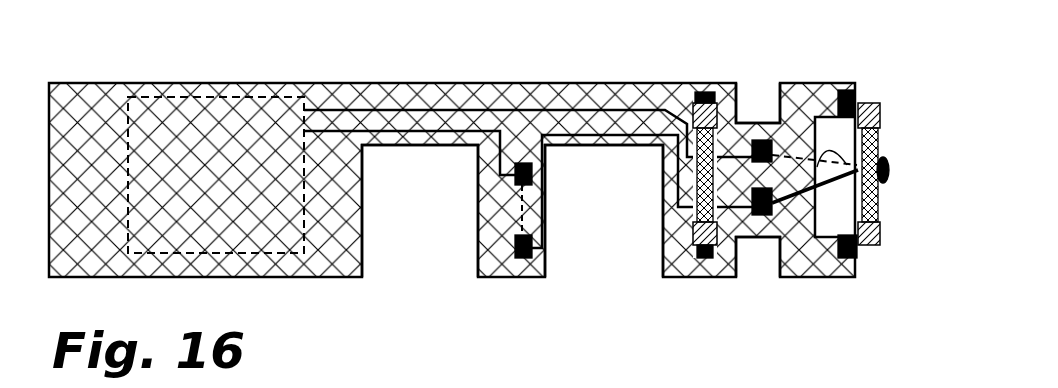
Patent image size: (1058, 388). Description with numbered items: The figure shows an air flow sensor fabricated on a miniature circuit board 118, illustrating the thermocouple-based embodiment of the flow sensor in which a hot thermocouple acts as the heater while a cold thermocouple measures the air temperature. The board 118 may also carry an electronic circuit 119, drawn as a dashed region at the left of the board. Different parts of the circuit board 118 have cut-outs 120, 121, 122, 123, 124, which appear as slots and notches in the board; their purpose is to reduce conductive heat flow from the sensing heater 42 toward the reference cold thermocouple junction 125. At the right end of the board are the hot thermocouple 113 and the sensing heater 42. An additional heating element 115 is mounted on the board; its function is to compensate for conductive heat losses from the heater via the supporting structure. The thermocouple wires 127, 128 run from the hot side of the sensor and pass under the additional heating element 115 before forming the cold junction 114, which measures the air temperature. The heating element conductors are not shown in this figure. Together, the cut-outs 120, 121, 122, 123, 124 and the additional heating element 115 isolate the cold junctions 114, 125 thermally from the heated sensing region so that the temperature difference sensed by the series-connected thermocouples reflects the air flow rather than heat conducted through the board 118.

The miniature circuit board 118 is at (88, 90).
The electronic circuit 119 is at (172, 97).
The cut-out 120 is at (400, 262).
The cut-out 121 is at (645, 243).
The cut-out 122 is at (760, 90).
The cut-out 123 is at (763, 262).
The cold thermocouple junction 114 is at (545, 248).
The reference cold thermocouple junction 125 is at (515, 208).
The additional heating element 115 is at (720, 132).
The cut-out 124 is at (830, 125).
The sensing heater 42 is at (882, 137).
The hot thermocouple 113 is at (890, 170).
The thermocouple wire 127 is at (808, 158).
The thermocouple wire 128 is at (833, 143).